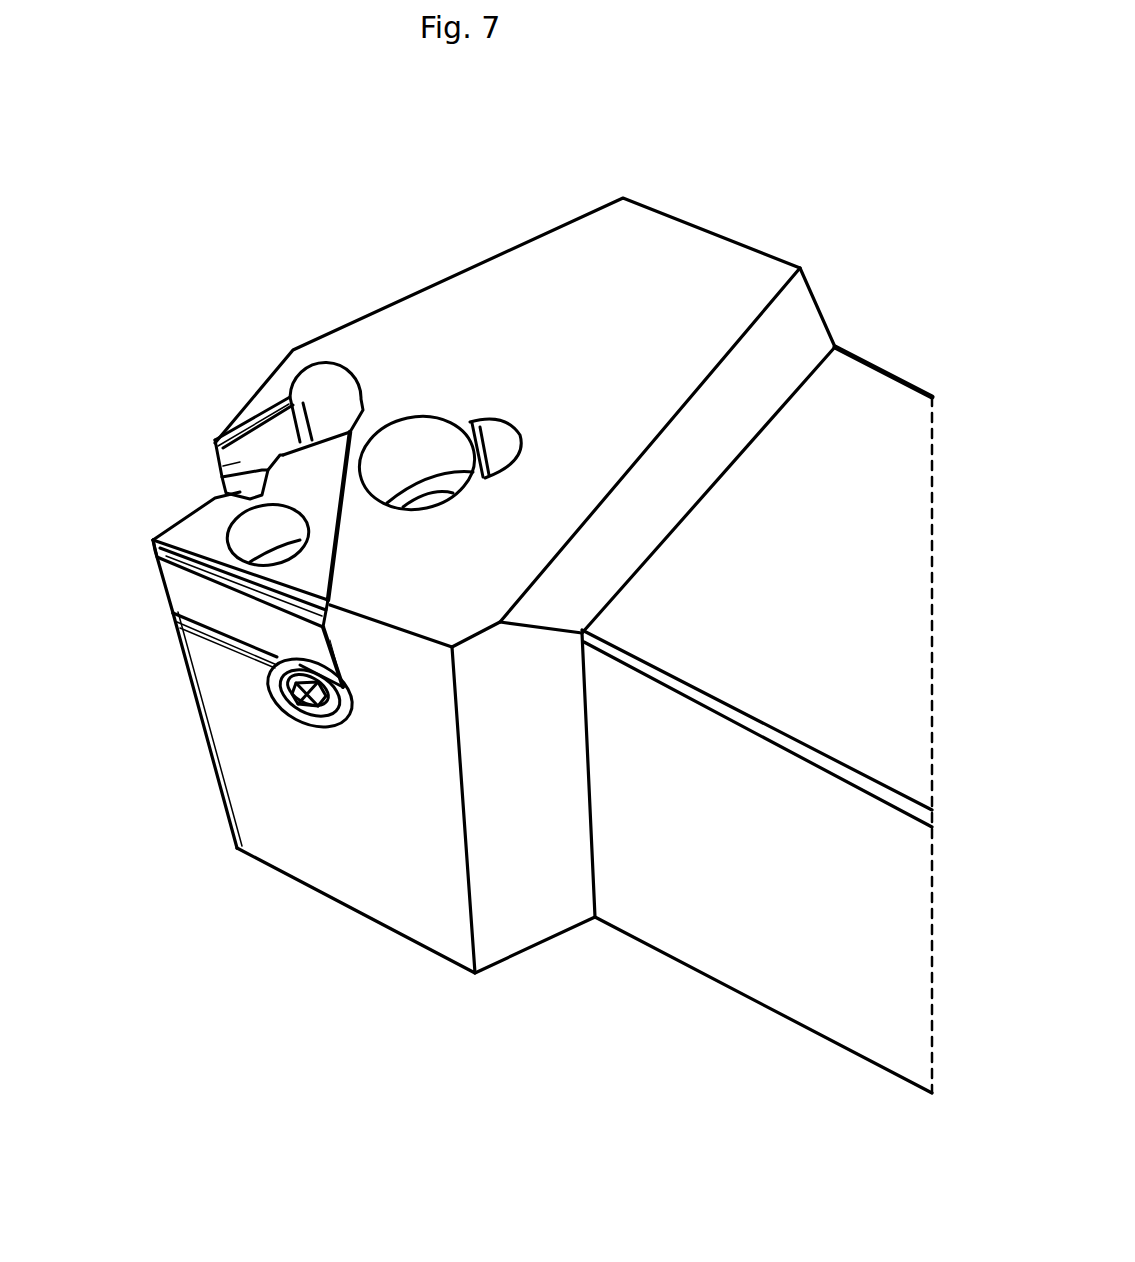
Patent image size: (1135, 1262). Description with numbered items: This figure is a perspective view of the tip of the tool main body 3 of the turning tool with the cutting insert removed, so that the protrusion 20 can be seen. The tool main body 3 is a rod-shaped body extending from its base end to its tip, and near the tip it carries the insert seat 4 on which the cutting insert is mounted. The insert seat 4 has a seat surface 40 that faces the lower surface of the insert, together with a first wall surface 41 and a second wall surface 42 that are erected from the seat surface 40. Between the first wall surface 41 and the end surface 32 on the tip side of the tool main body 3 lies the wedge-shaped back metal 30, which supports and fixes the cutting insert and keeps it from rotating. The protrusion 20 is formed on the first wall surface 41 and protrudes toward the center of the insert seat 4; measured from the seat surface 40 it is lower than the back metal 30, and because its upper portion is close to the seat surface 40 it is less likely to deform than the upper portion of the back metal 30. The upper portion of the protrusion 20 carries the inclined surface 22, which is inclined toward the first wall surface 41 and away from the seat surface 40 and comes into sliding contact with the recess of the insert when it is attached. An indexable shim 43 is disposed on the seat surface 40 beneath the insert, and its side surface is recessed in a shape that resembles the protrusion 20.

The tool main body 3 is at (503, 1103).
The insert seat 4 is at (333, 396).
The protrusion 20 is at (212, 480).
The inclined surface 22 is at (240, 502).
The back metal 30 is at (275, 388).
The end surface 32 is at (242, 393).
The seat surface 40 is at (220, 638).
The first wall surface 41 is at (213, 452).
The second wall surface 42 is at (310, 672).
The shim 43 is at (220, 613).